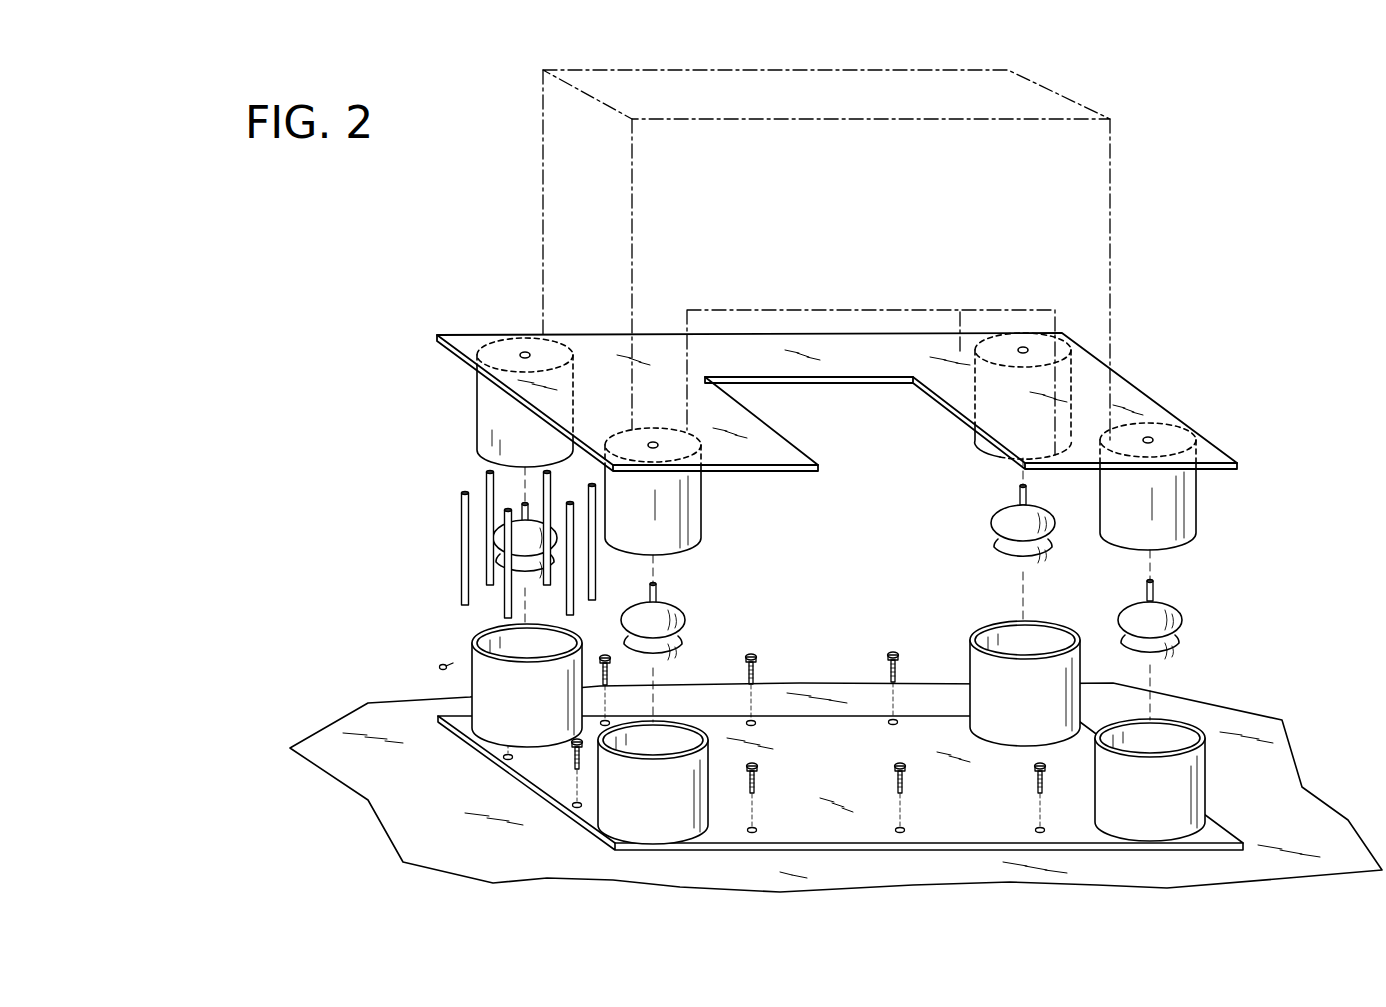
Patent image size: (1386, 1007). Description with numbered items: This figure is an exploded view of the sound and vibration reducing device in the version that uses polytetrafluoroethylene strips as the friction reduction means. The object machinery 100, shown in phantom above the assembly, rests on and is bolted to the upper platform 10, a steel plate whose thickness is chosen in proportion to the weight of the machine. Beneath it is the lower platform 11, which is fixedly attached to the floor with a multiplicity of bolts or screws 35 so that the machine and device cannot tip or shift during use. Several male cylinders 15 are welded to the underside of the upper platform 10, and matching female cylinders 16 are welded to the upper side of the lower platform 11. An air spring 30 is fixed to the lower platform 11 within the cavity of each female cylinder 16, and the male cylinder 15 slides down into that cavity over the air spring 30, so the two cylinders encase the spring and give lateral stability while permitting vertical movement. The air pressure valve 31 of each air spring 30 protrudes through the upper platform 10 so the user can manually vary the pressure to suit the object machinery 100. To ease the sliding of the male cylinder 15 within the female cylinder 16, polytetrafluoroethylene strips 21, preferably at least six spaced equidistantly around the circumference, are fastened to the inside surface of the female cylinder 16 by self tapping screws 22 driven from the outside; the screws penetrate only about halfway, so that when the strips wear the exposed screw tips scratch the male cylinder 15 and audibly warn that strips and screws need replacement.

The object machinery 100 is at (1100, 223).
The upper platform 10 is at (1213, 452).
The lower platform 11 is at (853, 775).
The male cylinder 15 is at (485, 408).
The female cylinder 16 is at (477, 678).
The polytetrafluoroethylene strips 21 is at (463, 527).
The self tapping screws 22 is at (448, 664).
The air spring 30 is at (1180, 628).
The air pressure valve 31 is at (1158, 586).
The bolts or screws 35 is at (905, 780).